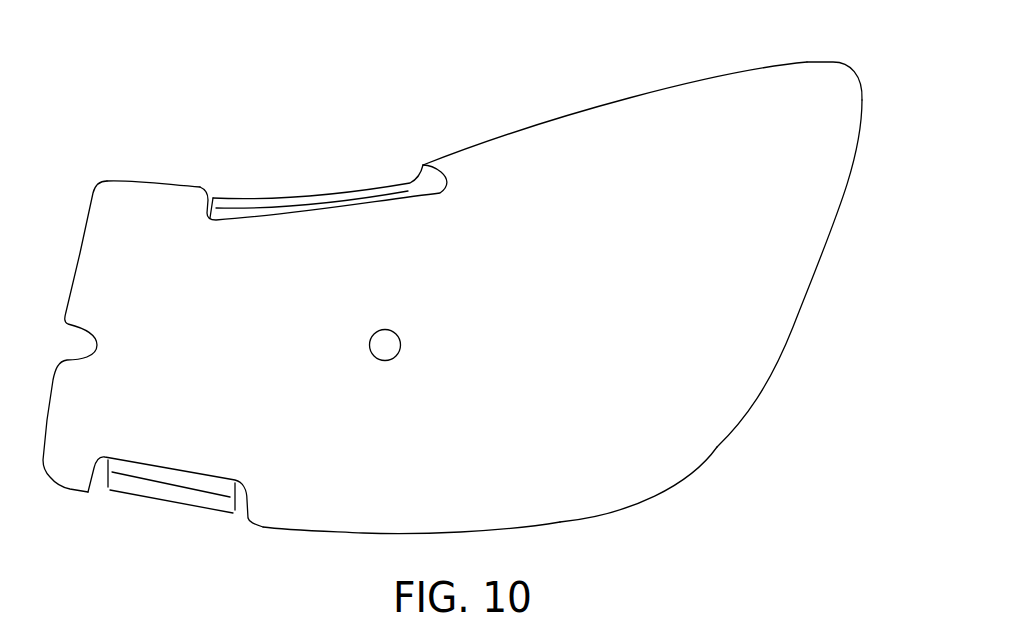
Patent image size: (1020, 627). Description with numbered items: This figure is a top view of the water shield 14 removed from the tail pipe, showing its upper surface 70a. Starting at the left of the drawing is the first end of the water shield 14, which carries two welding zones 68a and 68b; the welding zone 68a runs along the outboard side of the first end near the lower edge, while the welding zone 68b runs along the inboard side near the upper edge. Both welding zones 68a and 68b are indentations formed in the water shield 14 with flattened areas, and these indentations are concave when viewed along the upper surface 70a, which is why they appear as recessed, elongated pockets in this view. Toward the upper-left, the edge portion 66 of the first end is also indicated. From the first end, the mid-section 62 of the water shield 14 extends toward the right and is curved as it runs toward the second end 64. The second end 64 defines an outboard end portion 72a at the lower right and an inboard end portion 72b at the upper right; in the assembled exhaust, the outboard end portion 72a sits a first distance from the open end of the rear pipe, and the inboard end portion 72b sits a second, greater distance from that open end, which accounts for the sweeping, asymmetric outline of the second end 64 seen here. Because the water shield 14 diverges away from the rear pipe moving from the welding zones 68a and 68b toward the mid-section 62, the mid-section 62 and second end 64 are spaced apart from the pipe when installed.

The water shield 14 is at (238, 119).
The mid-section 62 is at (505, 138).
The second end 64 is at (853, 162).
The front edge 66 is at (145, 184).
The welding zone 68a is at (157, 492).
The welding zone 68b is at (307, 207).
The upper surface 70a is at (363, 453).
The outboard end portion 72a is at (575, 522).
The inboard end portion 72b is at (802, 60).